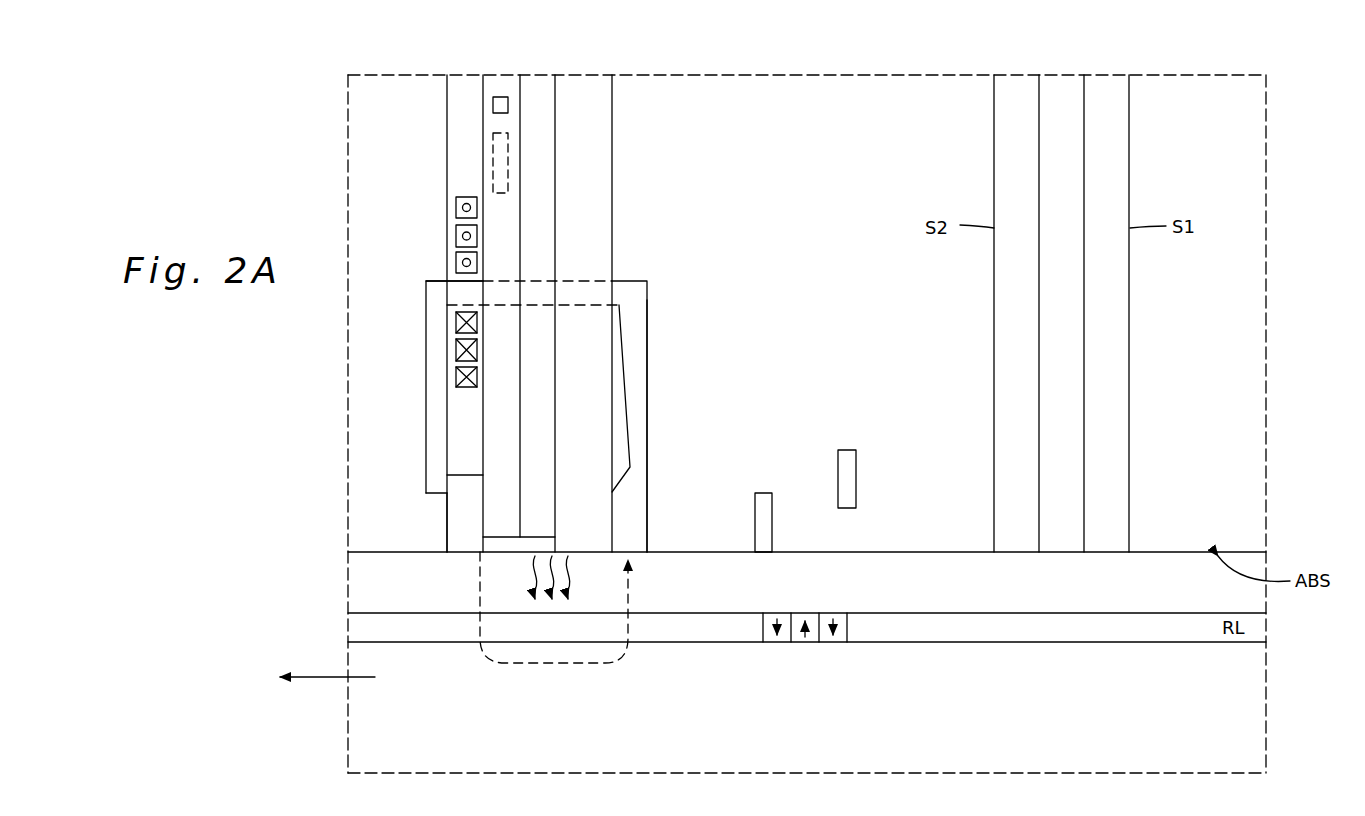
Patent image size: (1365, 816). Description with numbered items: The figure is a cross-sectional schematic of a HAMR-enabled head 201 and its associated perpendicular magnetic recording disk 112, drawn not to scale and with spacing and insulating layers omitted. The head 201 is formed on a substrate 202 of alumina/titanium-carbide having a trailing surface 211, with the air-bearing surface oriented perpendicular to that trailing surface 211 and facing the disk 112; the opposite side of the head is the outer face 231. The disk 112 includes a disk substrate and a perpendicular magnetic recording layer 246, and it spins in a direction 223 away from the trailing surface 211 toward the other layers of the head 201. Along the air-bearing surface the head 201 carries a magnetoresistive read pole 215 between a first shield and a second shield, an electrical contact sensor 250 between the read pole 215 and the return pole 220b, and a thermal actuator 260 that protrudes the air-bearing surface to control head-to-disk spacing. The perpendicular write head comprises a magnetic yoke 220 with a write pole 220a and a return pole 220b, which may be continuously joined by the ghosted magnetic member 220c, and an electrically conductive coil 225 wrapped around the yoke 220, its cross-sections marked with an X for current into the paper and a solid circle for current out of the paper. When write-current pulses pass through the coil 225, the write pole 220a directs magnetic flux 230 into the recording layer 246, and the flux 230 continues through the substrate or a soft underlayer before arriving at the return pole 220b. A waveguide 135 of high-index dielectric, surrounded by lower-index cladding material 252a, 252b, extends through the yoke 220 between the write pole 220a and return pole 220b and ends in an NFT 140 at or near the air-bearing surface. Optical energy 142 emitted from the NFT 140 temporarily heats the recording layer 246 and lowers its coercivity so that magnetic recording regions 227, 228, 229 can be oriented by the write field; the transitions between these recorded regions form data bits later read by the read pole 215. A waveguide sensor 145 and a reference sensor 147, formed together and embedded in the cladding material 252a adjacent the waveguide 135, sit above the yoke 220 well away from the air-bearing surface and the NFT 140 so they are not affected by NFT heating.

The head 201 is at (326, 83).
The substrate 202 is at (1257, 462).
The outer face 231 is at (357, 461).
The cladding material 252a is at (500, 82).
The waveguide 135 is at (540, 82).
The cladding material 252b is at (574, 82).
The waveguide sensor 145 is at (494, 105).
The reference sensor 147 is at (494, 160).
The coil 225 is at (445, 197).
The magnetic yoke 220 is at (426, 298).
The write pole 220a is at (446, 541).
The return pole 220b is at (648, 518).
The magnetic member 220c is at (630, 281).
The NFT 140 is at (540, 547).
The optical energy 142 is at (513, 583).
The perpendicular magnetic recording layer 246 is at (357, 631).
The magnetic flux 230 is at (545, 666).
The magnetic recording region 228 is at (770, 645).
The magnetic recording region 227 is at (797, 645).
The magnetic recording region 229 is at (838, 645).
The direction 223 is at (313, 680).
The perpendicular magnetic recording disk 112 is at (354, 750).
The electrical contact sensor 250 is at (757, 491).
The thermal actuator 260 is at (845, 449).
The trailing surface 211 is at (1125, 105).
The magnetoresistive read pole 215 is at (1060, 508).